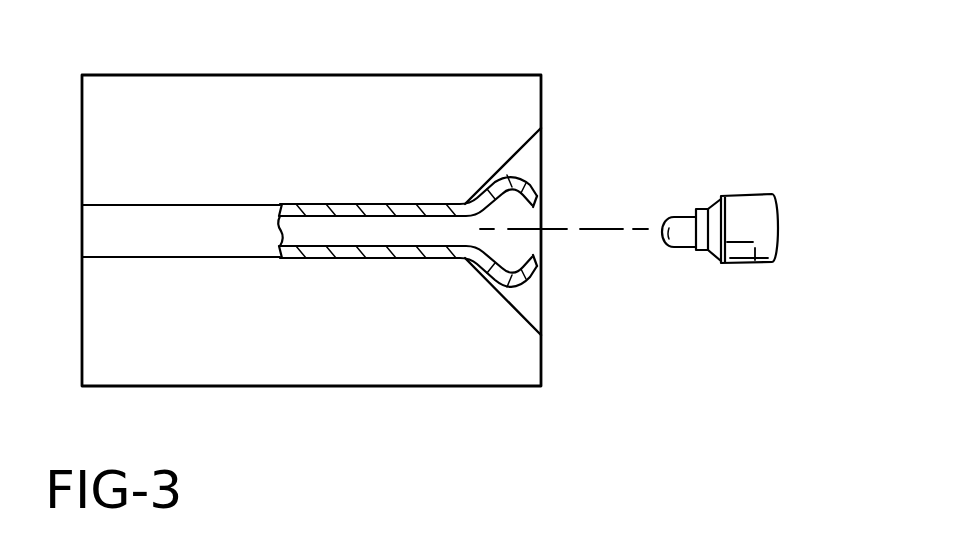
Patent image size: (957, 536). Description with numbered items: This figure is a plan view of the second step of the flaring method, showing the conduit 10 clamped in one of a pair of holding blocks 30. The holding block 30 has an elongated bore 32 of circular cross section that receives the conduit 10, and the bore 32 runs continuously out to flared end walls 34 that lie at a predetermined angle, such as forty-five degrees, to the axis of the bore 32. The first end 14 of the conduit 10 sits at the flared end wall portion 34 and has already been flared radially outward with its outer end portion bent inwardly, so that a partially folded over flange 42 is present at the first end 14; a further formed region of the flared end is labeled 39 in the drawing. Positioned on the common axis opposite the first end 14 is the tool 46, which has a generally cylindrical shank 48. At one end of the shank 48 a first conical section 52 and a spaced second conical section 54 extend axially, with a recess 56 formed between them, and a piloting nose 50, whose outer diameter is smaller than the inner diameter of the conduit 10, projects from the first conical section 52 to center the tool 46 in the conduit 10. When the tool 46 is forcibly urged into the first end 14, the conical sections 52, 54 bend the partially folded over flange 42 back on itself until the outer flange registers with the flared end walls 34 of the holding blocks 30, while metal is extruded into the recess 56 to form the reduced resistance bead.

The conduit 10 is at (298, 203).
The first end 14 is at (505, 170).
The holding block 30 is at (185, 79).
The bore 32 is at (117, 207).
The flared end wall 34 is at (513, 305).
The flared tube end 39 is at (505, 280).
The partially folded over flange 42 is at (530, 183).
The tool 46 is at (726, 242).
The shank 48 is at (756, 262).
The piloting nose 50 is at (675, 250).
The first conical section 52 is at (701, 253).
The second conical section 54 is at (713, 203).
The recess 56 is at (705, 204).